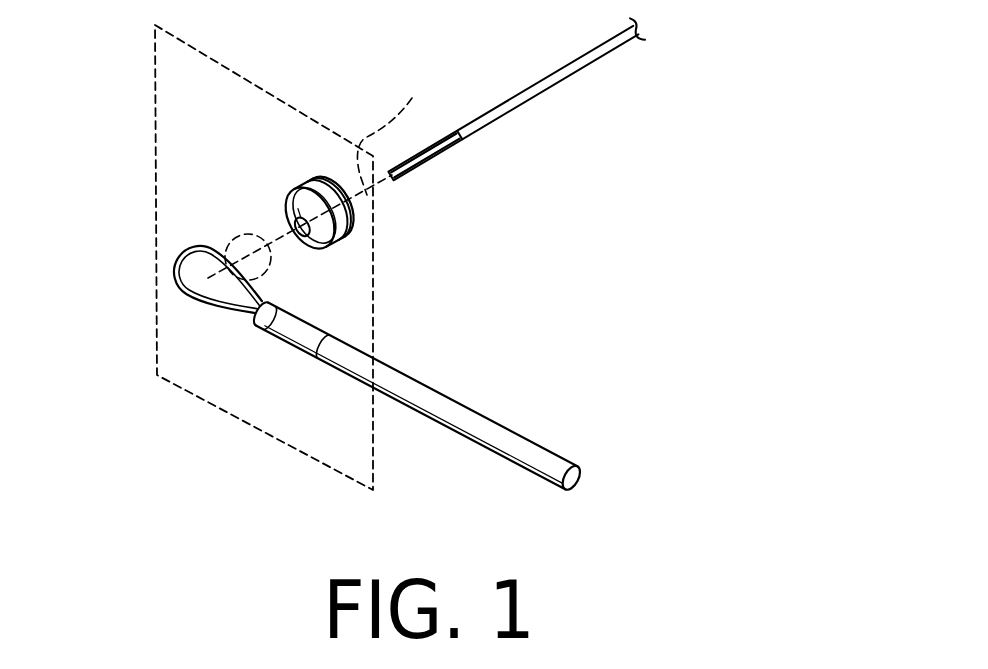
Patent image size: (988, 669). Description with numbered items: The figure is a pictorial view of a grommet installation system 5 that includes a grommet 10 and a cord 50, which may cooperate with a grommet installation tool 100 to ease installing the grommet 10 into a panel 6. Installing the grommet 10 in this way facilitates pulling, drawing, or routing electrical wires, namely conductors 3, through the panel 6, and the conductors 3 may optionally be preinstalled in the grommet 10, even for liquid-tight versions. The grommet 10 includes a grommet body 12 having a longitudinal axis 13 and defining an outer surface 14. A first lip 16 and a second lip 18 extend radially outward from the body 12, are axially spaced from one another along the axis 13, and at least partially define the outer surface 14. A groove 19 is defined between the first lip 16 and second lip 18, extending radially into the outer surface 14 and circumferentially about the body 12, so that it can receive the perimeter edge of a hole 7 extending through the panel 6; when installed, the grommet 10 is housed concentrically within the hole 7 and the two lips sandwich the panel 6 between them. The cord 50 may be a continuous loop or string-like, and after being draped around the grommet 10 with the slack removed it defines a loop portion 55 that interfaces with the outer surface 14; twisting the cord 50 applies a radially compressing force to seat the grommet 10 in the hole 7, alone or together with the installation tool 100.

The conductors 3 is at (593, 58).
The grommet installation system 5 is at (545, 373).
The panel 6 is at (306, 137).
The hole 7 is at (230, 245).
The grommet 10 is at (313, 215).
The grommet body 12 is at (302, 227).
The longitudinal axis 13 is at (398, 128).
The outer surface 14 is at (299, 214).
The first lip 16 is at (311, 217).
The second lip 18 is at (334, 205).
The groove 19 is at (329, 207).
The cord 50 is at (344, 364).
The loop portion 55 is at (210, 300).
The grommet installation tool 100 is at (358, 436).